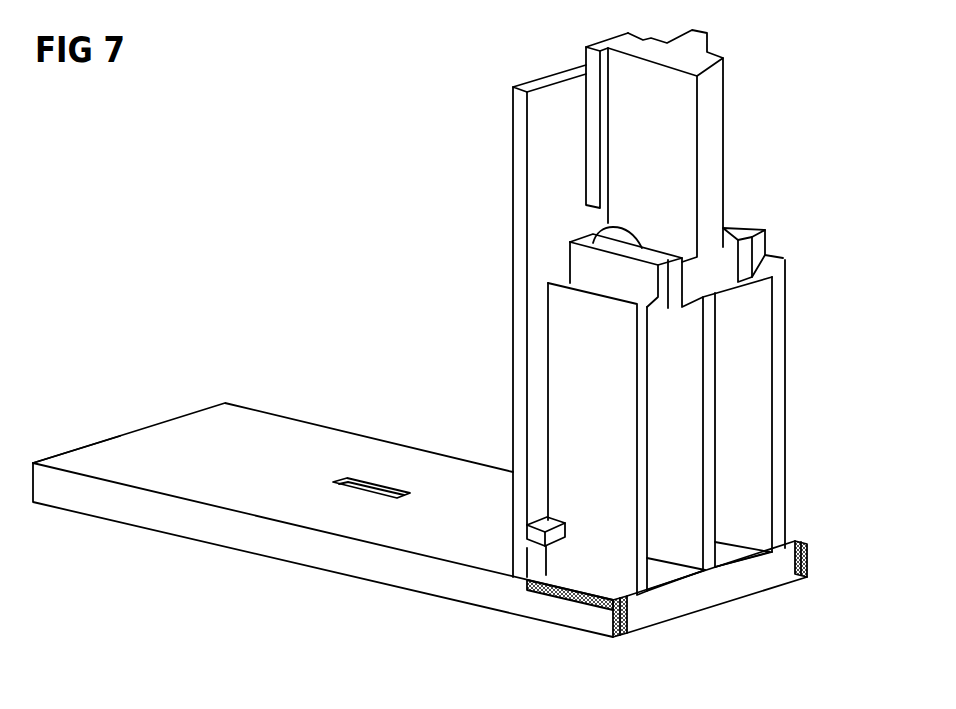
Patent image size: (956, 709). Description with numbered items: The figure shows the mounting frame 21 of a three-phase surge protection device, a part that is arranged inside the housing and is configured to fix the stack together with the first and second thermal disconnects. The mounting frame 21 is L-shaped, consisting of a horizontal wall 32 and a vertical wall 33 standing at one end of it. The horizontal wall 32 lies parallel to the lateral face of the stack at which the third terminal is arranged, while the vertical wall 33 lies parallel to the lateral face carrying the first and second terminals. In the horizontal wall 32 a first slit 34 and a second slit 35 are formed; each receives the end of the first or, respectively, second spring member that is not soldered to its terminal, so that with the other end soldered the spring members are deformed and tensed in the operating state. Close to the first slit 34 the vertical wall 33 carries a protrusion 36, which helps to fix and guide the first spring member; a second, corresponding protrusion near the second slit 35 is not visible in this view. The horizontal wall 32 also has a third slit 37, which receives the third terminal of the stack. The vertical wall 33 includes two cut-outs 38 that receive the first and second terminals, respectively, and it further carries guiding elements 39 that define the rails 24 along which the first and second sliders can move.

The mounting frame 21 is at (262, 430).
The rails 24 is at (642, 247).
The horizontal wall 32 is at (120, 452).
The vertical wall 33 is at (577, 126).
The first slit 34 is at (627, 613).
The second slit 35 is at (807, 558).
The protrusion 36 is at (540, 540).
The third slit 37 is at (367, 480).
The cut-outs 38 is at (588, 68).
The guiding elements 39 is at (640, 380).